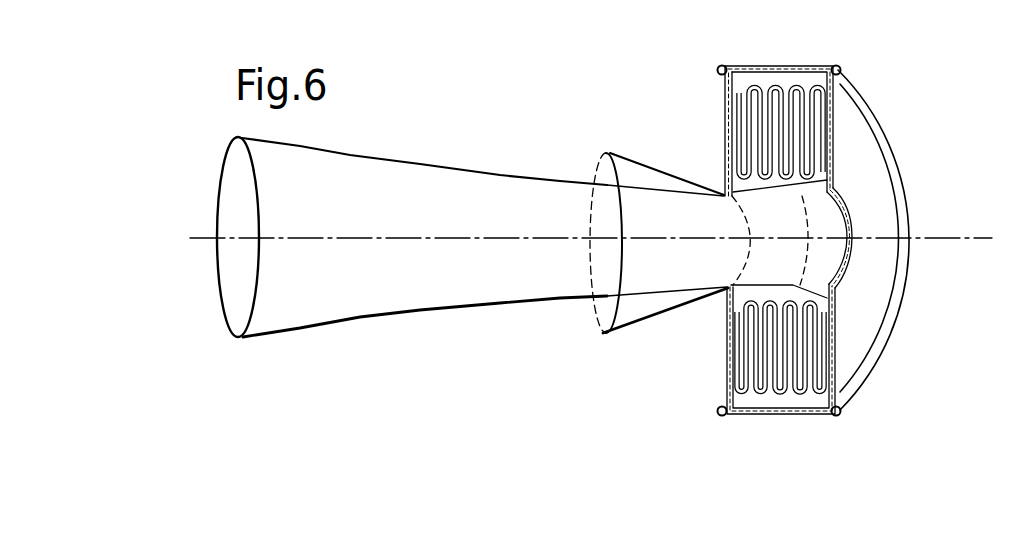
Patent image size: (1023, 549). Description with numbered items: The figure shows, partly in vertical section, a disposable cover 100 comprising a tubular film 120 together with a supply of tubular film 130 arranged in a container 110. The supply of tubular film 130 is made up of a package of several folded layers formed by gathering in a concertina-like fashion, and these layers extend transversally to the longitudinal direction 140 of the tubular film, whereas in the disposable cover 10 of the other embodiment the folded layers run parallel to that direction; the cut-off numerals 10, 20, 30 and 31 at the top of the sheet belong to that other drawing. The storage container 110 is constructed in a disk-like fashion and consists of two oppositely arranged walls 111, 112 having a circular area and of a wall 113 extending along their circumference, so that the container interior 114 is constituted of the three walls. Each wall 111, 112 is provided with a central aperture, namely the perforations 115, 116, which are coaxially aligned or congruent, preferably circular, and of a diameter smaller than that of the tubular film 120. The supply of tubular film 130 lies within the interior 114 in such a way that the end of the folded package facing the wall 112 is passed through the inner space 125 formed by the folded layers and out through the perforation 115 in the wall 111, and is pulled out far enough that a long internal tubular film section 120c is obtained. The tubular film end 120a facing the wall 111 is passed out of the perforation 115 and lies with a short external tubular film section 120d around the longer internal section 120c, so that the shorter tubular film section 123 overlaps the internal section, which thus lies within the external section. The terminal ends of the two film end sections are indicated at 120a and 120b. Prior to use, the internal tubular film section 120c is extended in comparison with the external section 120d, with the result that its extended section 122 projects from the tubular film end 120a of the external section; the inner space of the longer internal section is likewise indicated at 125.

The disposable cover 100 is at (564, 339).
The container 110 is at (895, 123).
The wall 111 is at (727, 105).
The wall 112 is at (852, 118).
The wall 113 is at (748, 66).
The container interior 114 is at (838, 400).
The perforation 115 is at (748, 238).
The perforation 116 is at (852, 215).
The tubular film 120 is at (680, 184).
The tubular film end 120a is at (610, 153).
The tubular film end 120b is at (242, 340).
The internal tubular film section 120c is at (408, 180).
The external tubular film section 120d is at (645, 310).
The extended section 122 is at (385, 320).
The shorter tubular film section 123 is at (643, 171).
The inner space 125 is at (830, 177).
The supply of tubular film 130 is at (789, 83).
The longitudinal direction 140 is at (982, 235).
The disposable cover 10 is at (498, 0).
The element of adjacent figure 20 is at (681, 14).
The element of adjacent figure 30 is at (613, 0).
The element of adjacent figure 31 is at (991, 9).